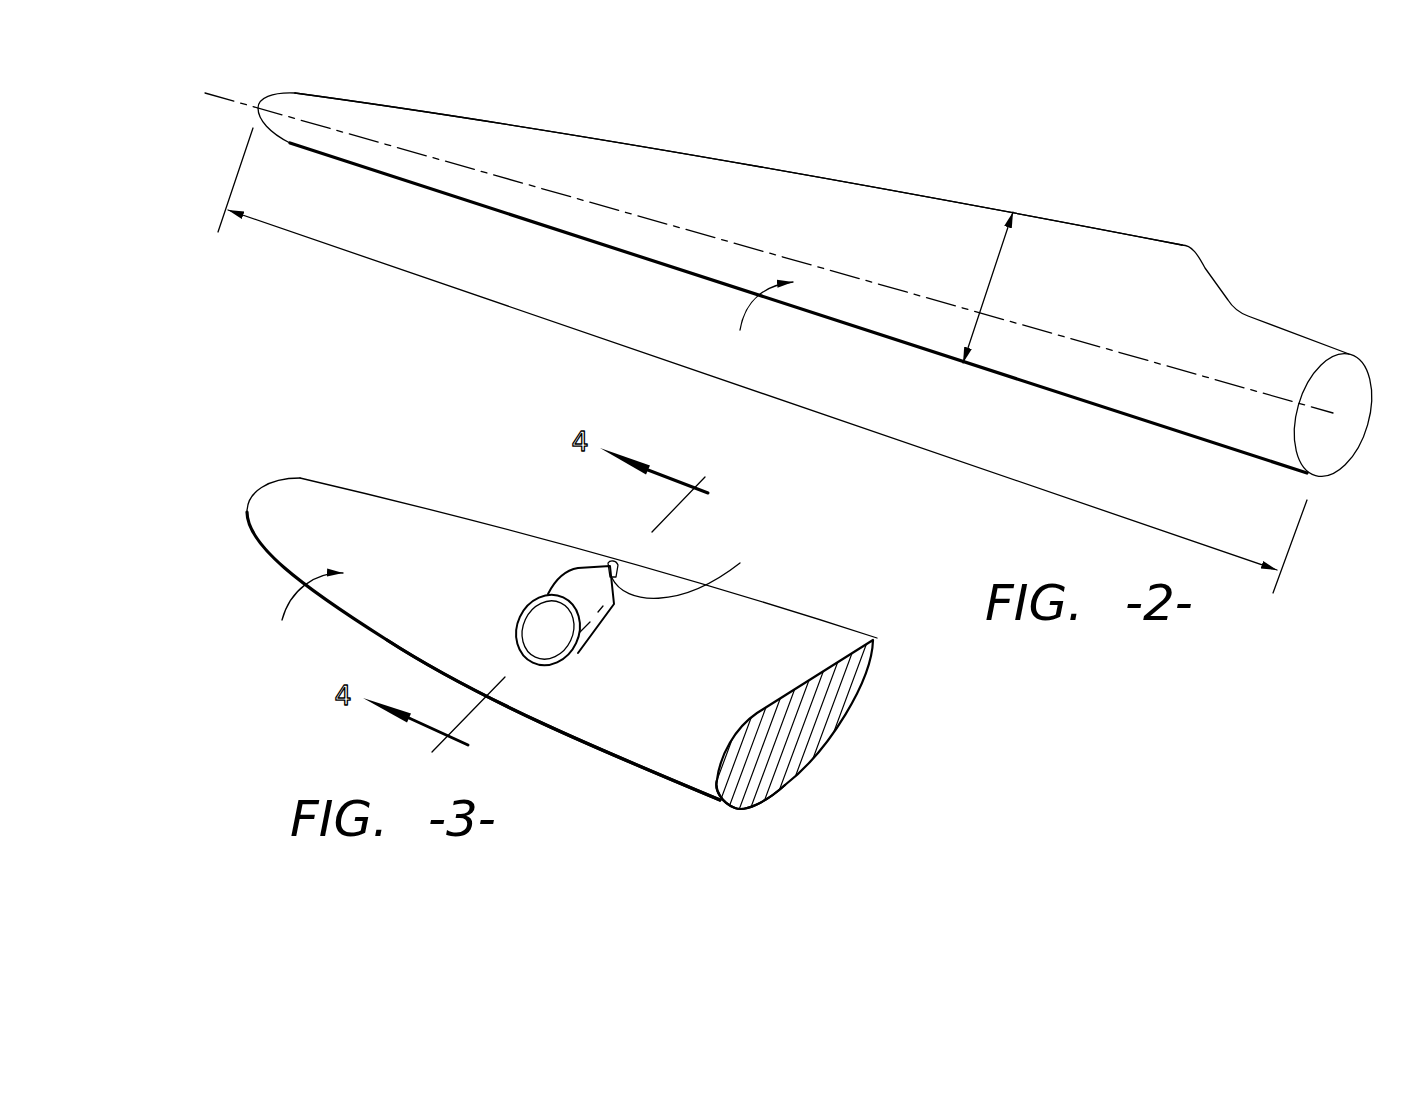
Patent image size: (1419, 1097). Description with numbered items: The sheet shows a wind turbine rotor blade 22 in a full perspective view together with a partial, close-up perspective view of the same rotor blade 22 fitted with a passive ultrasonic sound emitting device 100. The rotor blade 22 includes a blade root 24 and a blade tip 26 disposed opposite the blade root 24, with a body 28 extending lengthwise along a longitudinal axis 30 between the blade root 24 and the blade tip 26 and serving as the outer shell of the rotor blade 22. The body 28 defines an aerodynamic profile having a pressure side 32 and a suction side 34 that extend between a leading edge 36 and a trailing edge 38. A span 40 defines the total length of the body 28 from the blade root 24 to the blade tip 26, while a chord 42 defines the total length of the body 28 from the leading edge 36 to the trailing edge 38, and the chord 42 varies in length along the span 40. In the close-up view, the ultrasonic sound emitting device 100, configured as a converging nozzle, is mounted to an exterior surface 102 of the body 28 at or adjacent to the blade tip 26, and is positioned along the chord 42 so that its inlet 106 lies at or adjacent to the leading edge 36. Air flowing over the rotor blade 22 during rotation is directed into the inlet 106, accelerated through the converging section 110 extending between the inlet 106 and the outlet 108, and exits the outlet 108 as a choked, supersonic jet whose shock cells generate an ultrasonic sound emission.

In FIG. 2, the rotor blade 22 is at (791, 314).
In FIG. 3, the rotor blade 22 is at (574, 607).
In FIG. 2, the blade root 24 is at (1312, 480).
In FIG. 2, the blade tip 26 is at (258, 108).
In FIG. 3, the blade tip 26 is at (250, 498).
In FIG. 2, the body 28 is at (756, 323).
In FIG. 3, the body 28 is at (304, 613).
In FIG. 2, the longitudinal axis 30 is at (463, 168).
In FIG. 2, the pressure side 32 is at (847, 200).
In FIG. 3, the pressure side 32 is at (737, 713).
In FIG. 2, the suction side 34 is at (1095, 265).
In FIG. 3, the suction side 34 is at (803, 767).
In FIG. 2, the leading edge 36 is at (1112, 415).
In FIG. 3, the leading edge 36 is at (722, 808).
In FIG. 2, the trailing edge 38 is at (742, 158).
In FIG. 3, the trailing edge 38 is at (876, 640).
In FIG. 2, the span 40 is at (520, 313).
In FIG. 2, the chord 42 is at (970, 327).
In FIG. 3, the ultrasonic sound emitting device 100 is at (643, 619).
In FIG. 3, the exterior surface 102 is at (647, 700).
In FIG. 3, the inlet 106 is at (537, 667).
In FIG. 3, the outlet 108 is at (616, 567).
In FIG. 3, the converging section 110 is at (700, 565).